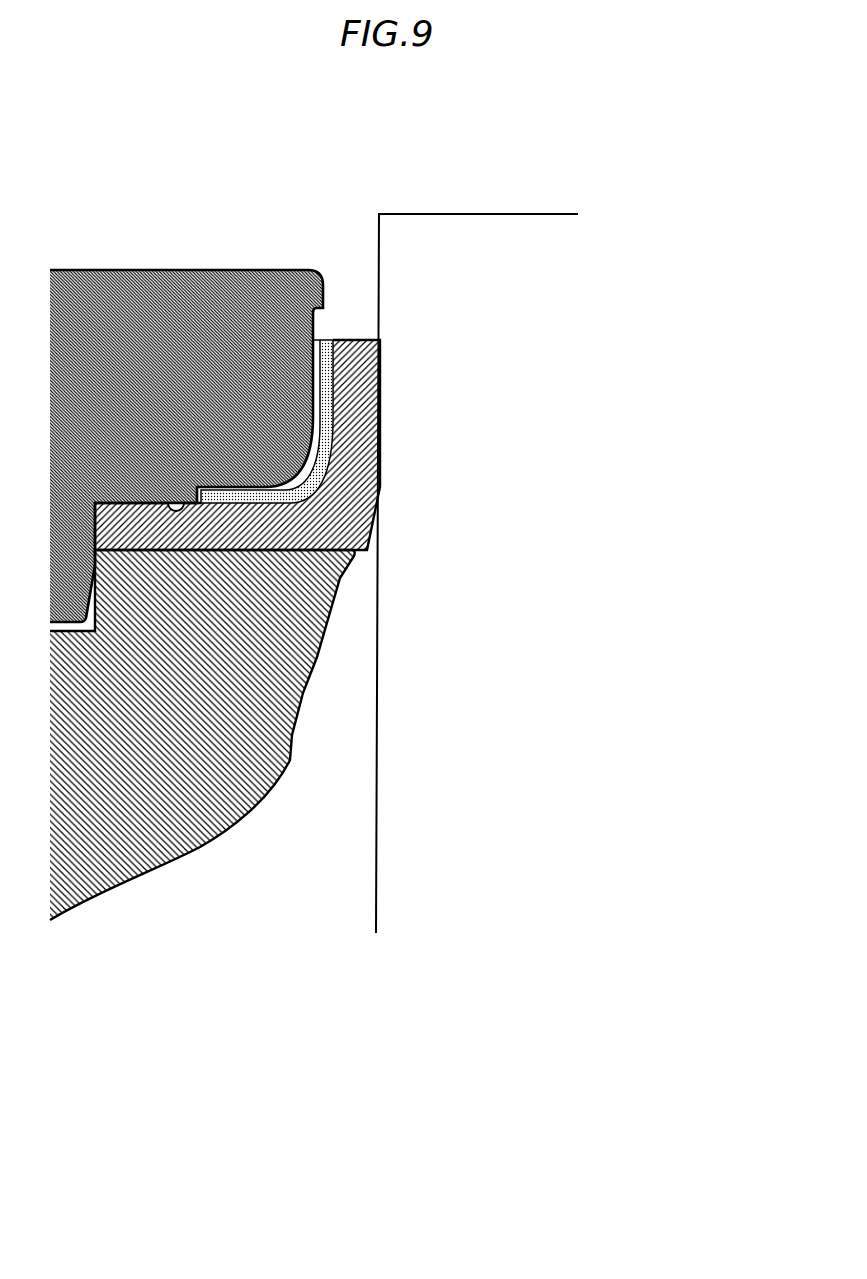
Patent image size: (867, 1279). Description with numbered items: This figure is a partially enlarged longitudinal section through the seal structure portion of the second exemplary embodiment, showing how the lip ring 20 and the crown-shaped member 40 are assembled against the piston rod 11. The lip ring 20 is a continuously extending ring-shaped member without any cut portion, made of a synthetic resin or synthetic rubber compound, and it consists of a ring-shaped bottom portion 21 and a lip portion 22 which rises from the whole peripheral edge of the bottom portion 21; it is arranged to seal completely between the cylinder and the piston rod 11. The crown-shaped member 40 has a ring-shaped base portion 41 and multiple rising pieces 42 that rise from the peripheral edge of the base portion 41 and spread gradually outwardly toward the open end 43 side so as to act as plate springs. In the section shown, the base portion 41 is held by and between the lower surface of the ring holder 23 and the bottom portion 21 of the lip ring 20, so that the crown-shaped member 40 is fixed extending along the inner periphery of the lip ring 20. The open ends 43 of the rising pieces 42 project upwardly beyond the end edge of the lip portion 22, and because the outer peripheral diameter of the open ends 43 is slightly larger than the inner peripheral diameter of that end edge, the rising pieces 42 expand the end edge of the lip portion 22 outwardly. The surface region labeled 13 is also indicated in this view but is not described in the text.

The piston rod 11 is at (250, 877).
The housing body portion 13 is at (322, 825).
The lip ring 20 is at (371, 542).
The ring-shaped bottom portion 21 is at (322, 816).
The lip portion 22 is at (367, 368).
The ring holder 23 is at (165, 298).
The crown-shaped member 40 is at (450, 409).
The base portion 41 is at (243, 500).
The rising pieces 42 is at (332, 420).
The open end 43 is at (327, 338).